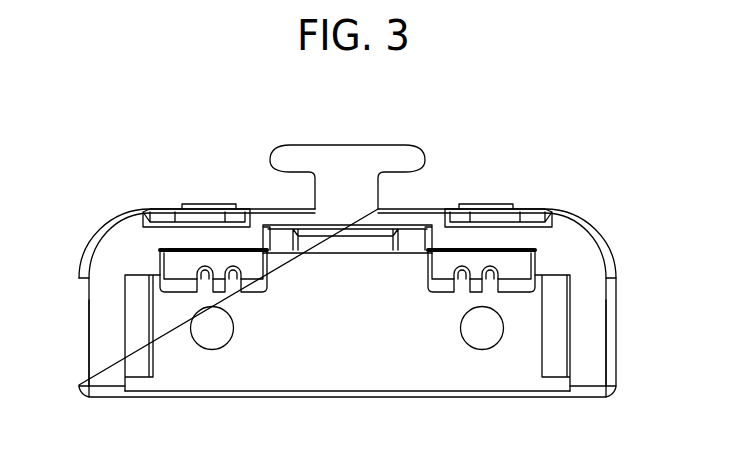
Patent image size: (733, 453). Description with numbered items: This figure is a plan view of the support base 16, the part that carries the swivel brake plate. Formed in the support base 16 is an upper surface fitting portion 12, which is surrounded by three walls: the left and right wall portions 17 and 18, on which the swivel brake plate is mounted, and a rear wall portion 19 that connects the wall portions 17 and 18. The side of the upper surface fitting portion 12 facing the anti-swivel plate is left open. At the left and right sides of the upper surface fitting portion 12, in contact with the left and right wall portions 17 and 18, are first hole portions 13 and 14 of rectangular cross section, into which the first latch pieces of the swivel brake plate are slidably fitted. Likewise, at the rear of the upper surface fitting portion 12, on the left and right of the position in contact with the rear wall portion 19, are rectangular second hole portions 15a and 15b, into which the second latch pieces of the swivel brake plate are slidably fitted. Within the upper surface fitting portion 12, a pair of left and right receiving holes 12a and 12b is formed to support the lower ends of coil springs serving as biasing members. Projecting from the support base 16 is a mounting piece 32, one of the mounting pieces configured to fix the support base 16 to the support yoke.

The upper surface fitting portion 12 is at (347, 272).
The receiving hole 12a is at (222, 332).
The receiving hole 12b is at (475, 332).
The first hole portion 13 is at (133, 337).
The first hole portion 14 is at (555, 332).
The second hole portion 15a is at (205, 267).
The second hole portion 15b is at (500, 262).
The support base 16 is at (92, 223).
The left wall portion 17 is at (112, 297).
The right wall portion 18 is at (588, 297).
The rear wall portion 19 is at (457, 237).
The mounting piece 32 is at (344, 158).